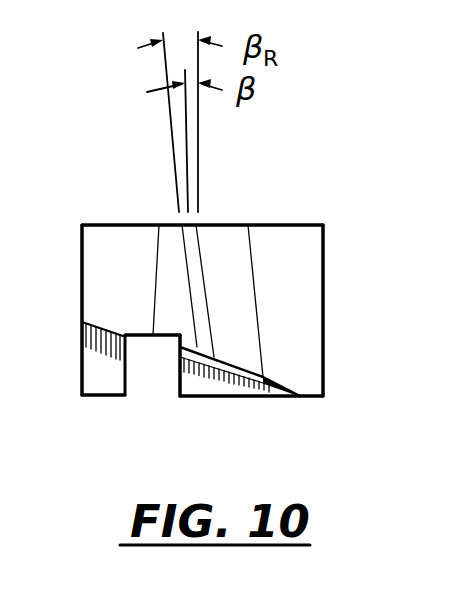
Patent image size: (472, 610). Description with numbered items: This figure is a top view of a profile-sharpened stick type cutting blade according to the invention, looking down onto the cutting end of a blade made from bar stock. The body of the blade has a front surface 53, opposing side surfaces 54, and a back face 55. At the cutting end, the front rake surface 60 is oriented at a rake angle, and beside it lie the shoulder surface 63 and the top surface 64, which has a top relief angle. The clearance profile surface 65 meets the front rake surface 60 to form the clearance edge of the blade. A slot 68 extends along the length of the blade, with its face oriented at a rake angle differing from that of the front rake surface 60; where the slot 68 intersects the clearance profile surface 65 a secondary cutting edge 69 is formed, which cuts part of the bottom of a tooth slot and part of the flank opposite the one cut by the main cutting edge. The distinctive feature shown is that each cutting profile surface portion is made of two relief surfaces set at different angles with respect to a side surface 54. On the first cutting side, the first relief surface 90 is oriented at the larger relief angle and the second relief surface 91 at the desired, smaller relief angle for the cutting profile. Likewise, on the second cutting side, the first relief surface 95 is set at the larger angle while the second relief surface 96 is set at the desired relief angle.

The front surface 53 is at (98, 397).
The side surface 54 is at (80, 297).
The back face 55 is at (300, 226).
The front rake surface 60 is at (117, 361).
The shoulder surface 63 is at (298, 265).
The top surface 64 is at (170, 238).
The clearance profile surface 65 is at (135, 282).
The slot 68 is at (158, 378).
The secondary cutting edge 69 is at (140, 337).
The first relief surface 90 is at (199, 244).
The second relief surface 91 is at (203, 397).
The first relief surface 95 is at (230, 242).
The second relief surface 96 is at (233, 397).